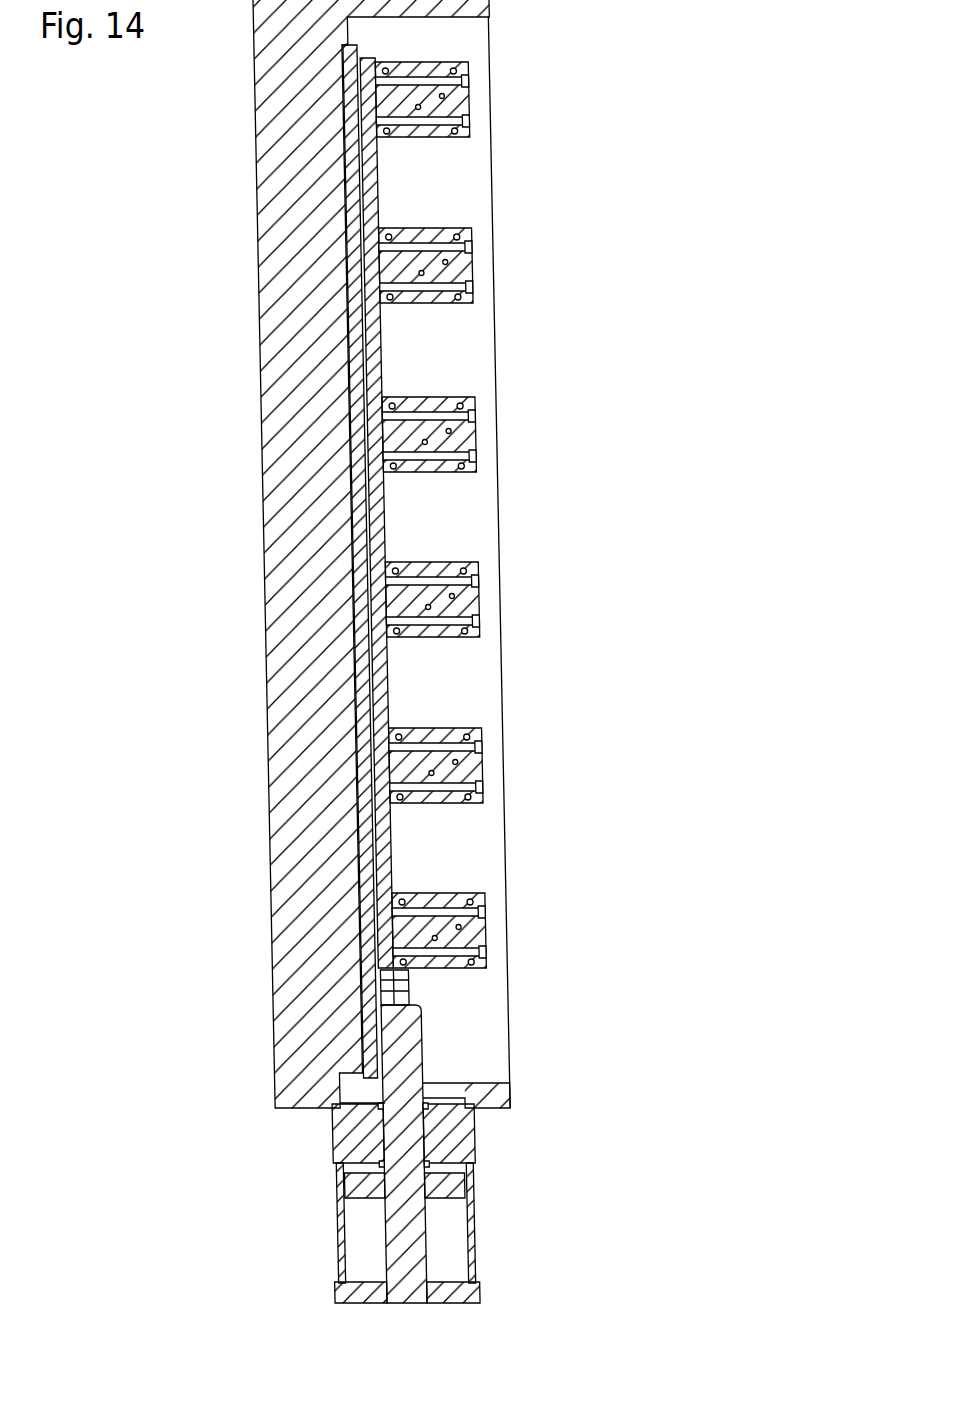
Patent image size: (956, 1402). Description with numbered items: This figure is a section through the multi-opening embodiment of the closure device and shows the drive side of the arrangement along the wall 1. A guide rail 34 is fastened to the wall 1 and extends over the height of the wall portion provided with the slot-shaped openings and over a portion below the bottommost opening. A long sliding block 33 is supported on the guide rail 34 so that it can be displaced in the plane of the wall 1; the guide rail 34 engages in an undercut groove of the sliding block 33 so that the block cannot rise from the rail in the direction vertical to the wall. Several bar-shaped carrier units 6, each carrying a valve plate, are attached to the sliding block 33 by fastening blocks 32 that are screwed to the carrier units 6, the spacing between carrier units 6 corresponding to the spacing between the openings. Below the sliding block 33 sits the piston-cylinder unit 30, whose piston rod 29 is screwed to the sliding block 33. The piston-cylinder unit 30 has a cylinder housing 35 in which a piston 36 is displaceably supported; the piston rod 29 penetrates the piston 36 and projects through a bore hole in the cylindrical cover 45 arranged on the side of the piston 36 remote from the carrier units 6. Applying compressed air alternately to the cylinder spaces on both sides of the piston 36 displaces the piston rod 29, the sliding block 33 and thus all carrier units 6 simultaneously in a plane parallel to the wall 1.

The wall 1 is at (297, 770).
The carrier unit 6 is at (496, 562).
The piston rod 29 is at (413, 1037).
The piston-cylinder unit 30 is at (432, 1203).
The fastening block 32 is at (458, 98).
The sliding block 33 is at (378, 512).
The guide rail 34 is at (357, 350).
The cylinder housing 35 is at (472, 1232).
The piston 36 is at (367, 1188).
The cylindrical cover 45 is at (373, 1290).